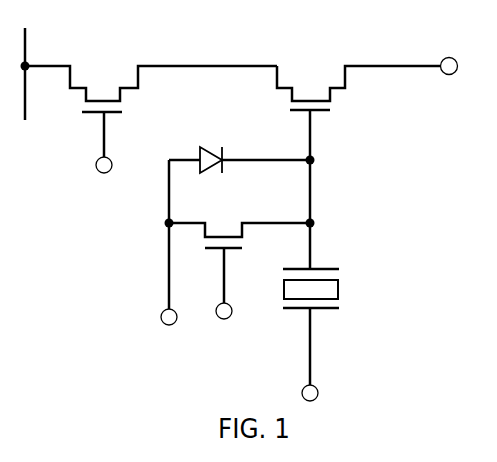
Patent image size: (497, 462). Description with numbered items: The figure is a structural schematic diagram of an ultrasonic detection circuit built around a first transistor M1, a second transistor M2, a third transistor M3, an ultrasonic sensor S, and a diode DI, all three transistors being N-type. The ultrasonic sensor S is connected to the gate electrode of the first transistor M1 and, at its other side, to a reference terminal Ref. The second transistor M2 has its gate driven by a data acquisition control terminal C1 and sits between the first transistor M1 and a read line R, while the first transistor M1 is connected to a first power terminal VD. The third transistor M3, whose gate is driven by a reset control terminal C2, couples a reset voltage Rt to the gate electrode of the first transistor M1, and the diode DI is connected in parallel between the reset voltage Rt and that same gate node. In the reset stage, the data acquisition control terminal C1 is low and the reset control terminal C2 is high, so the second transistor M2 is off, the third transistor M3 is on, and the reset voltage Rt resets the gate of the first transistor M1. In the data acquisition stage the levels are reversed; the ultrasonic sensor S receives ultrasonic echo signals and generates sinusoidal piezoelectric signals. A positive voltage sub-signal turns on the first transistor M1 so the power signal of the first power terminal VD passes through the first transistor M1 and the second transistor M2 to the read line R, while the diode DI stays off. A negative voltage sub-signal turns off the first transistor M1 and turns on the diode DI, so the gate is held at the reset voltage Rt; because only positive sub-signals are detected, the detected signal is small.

The read line R is at (38, 70).
The second transistor M2 is at (151, 75).
The first transistor M1 is at (358, 128).
The first power terminal VD is at (452, 85).
The data acquisition control terminal C1 is at (82, 143).
The diode DI is at (242, 145).
The third transistor M3 is at (240, 220).
The reset voltage Rt is at (171, 260).
The reset control terminal C2 is at (232, 301).
The ultrasonic sensor S is at (325, 265).
The reference terminal Ref is at (333, 355).